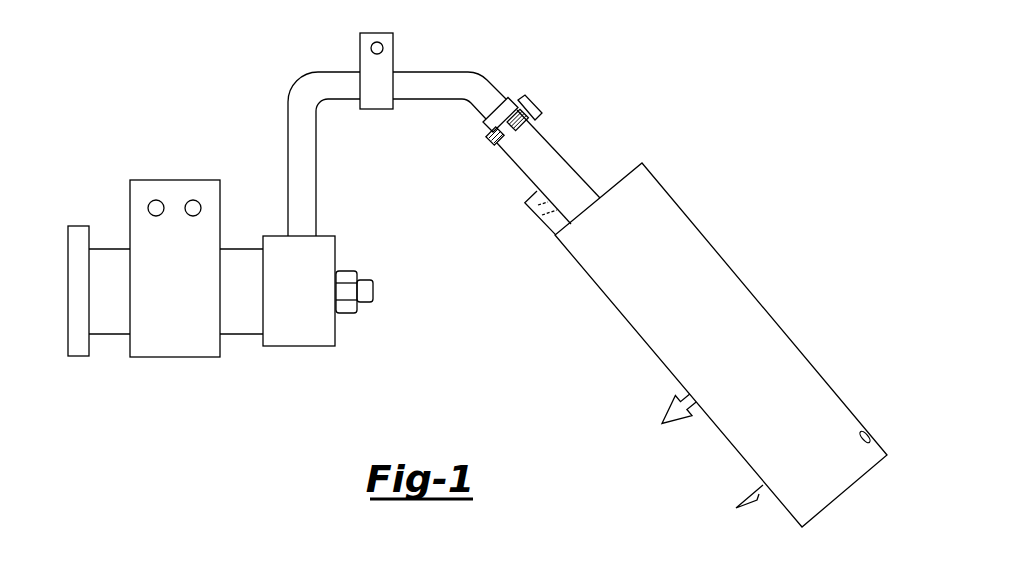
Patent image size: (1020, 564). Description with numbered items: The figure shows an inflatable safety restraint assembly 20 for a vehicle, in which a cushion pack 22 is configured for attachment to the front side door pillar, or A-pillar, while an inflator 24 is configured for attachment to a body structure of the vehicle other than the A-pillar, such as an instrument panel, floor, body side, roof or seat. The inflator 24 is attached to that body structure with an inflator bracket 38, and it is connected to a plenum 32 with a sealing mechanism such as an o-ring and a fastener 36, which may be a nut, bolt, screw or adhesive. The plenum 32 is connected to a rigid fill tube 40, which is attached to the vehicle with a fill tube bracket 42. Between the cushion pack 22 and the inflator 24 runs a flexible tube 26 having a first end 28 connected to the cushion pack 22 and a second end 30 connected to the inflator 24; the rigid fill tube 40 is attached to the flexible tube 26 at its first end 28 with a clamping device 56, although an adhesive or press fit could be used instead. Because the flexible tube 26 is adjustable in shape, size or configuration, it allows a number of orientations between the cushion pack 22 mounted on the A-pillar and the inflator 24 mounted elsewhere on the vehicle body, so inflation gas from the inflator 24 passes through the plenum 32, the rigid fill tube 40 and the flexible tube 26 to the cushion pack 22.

The inflatable safety restraint assembly 20 is at (655, 73).
The cushion pack 22 is at (730, 333).
The inflator 24 is at (110, 328).
The flexible tube 26 is at (533, 173).
The first end 28 is at (597, 188).
The second end 30 is at (516, 88).
The plenum 32 is at (302, 335).
The fastener 36 is at (343, 273).
The inflator bracket 38 is at (173, 198).
The rigid fill tube 40 is at (293, 108).
The fill tube bracket 42 is at (367, 42).
The clamping device 56 is at (540, 100).